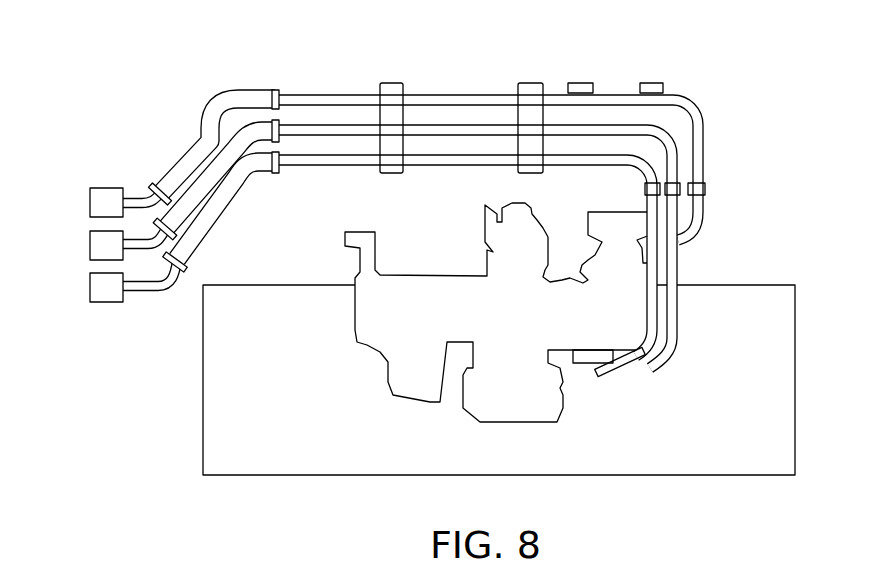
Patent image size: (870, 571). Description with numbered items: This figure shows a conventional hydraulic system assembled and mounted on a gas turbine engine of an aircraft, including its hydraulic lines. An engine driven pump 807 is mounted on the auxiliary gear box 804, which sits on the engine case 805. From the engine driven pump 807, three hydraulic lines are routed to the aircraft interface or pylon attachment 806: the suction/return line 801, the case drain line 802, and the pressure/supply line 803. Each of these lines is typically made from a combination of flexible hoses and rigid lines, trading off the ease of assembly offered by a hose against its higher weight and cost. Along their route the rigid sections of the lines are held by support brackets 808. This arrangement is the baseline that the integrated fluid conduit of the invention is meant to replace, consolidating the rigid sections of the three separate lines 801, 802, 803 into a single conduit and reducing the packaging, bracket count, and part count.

The suction/return line 801 is at (480, 125).
The case drain line 802 is at (422, 93).
The pressure/supply line 803 is at (325, 167).
The auxiliary gear box 804 is at (617, 345).
The engine case 805 is at (773, 355).
The pylon attachment 806 is at (68, 172).
The engine driven pump 807 is at (587, 363).
The support brackets 808 is at (643, 82).